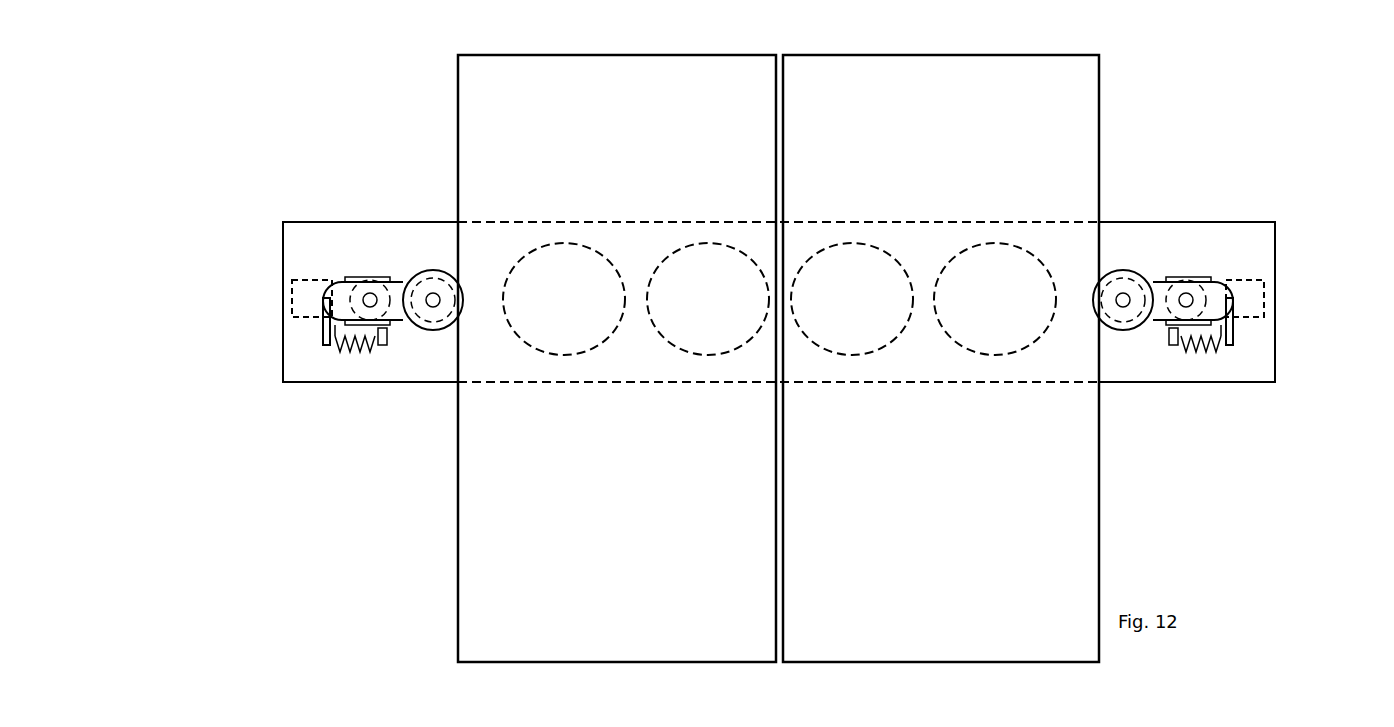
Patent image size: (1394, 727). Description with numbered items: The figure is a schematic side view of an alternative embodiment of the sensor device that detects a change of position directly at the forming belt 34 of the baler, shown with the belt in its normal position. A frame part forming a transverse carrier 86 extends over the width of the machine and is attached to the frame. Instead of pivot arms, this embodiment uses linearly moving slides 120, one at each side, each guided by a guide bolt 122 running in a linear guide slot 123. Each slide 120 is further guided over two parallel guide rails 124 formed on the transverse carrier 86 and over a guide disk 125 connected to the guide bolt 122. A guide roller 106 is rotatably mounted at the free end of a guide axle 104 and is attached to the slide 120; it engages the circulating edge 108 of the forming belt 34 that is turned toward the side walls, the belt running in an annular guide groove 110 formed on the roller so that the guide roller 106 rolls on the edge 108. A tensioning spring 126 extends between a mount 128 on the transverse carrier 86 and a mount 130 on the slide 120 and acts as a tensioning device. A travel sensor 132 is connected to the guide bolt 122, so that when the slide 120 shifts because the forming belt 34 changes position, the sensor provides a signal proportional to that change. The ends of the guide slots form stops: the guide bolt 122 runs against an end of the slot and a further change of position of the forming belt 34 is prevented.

The forming belt 34 is at (622, 491).
The transverse carrier 86 is at (315, 242).
The guide axle 104 is at (440, 300).
The guide roller 106 is at (450, 330).
The circulating edge 108 is at (457, 612).
The annular guide groove 110 is at (437, 272).
The slide 120 is at (325, 286).
The guide bolt 122 is at (362, 345).
The linear guide slot 123 is at (334, 348).
The guide rail 124 is at (375, 277).
The guide disk 125 is at (358, 276).
The tensioning spring 126 is at (370, 352).
The mount 128 is at (390, 277).
The mount 130 is at (322, 333).
The travel sensor 132 is at (293, 292).